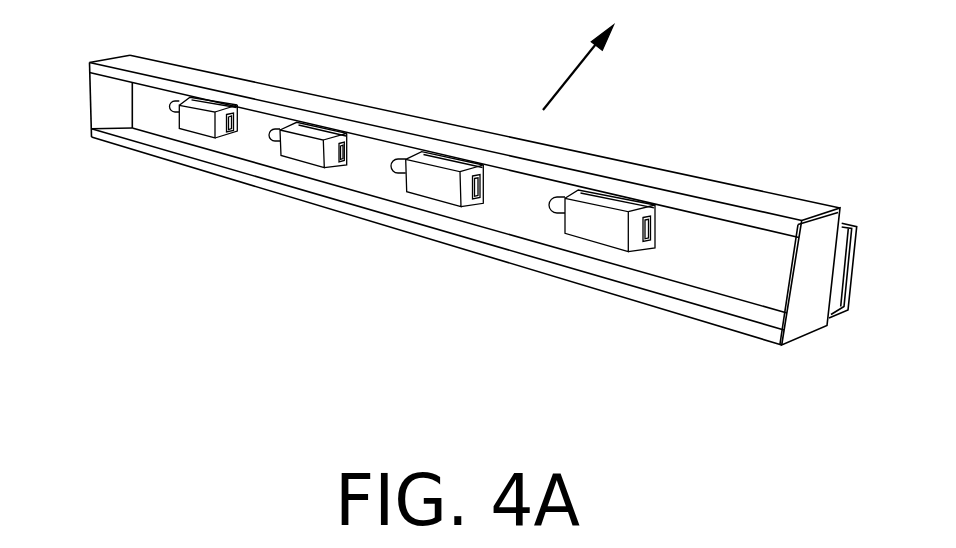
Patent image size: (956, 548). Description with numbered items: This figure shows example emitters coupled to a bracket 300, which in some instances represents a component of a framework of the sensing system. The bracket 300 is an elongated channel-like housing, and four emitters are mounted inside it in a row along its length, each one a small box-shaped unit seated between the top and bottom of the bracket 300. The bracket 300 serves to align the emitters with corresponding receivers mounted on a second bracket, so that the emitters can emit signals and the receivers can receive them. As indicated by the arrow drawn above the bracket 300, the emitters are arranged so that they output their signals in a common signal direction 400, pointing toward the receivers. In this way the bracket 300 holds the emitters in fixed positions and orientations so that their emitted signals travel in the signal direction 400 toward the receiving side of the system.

The bracket 300 is at (124, 44).
The signal direction 400 is at (643, 76).